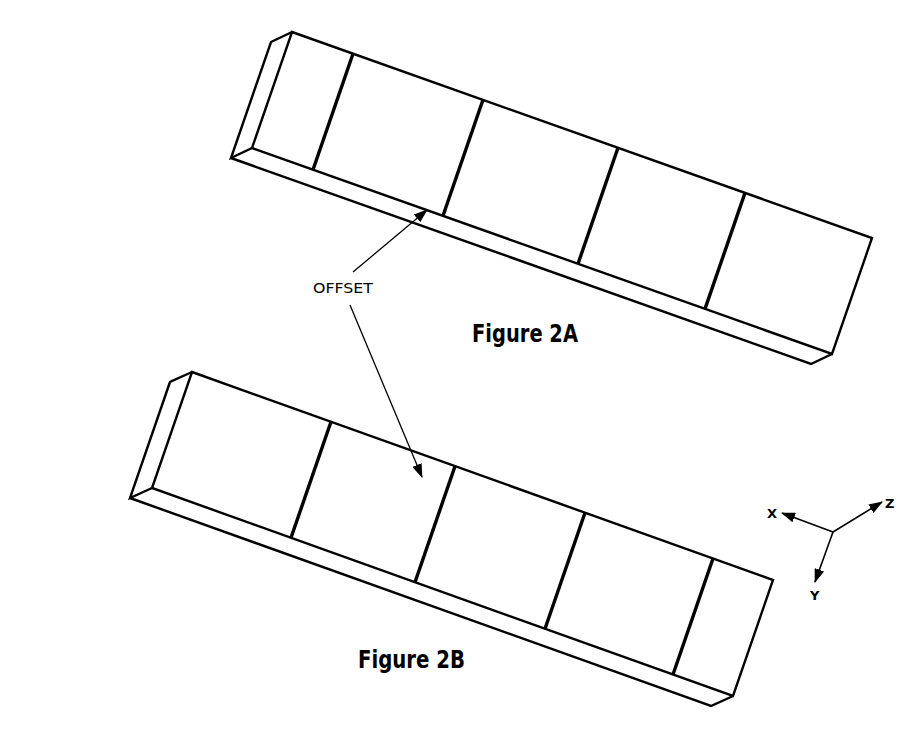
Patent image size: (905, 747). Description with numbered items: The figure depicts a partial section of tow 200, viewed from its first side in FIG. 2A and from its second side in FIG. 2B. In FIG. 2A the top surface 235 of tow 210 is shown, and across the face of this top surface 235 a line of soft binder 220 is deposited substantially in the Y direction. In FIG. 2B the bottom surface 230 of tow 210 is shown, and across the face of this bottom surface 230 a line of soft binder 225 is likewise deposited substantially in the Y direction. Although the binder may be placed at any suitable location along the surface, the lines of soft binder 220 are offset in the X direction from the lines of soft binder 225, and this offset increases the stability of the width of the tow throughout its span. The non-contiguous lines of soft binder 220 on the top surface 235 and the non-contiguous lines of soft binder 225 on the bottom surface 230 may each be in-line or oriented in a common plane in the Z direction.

In FIG. 2A, the tow 200 is at (730, 133).
In FIG. 2B, the tow 200 is at (267, 593).
In FIG. 2A, the tow 210 is at (763, 303).
In FIG. 2B, the tow 210 is at (603, 605).
In FIG. 2A, the line of soft binder 220 is at (704, 312).
In FIG. 2B, the line of soft binder 225 is at (547, 623).
In FIG. 2B, the bottom surface 230 is at (195, 460).
In FIG. 2A, the top surface 235 is at (302, 122).